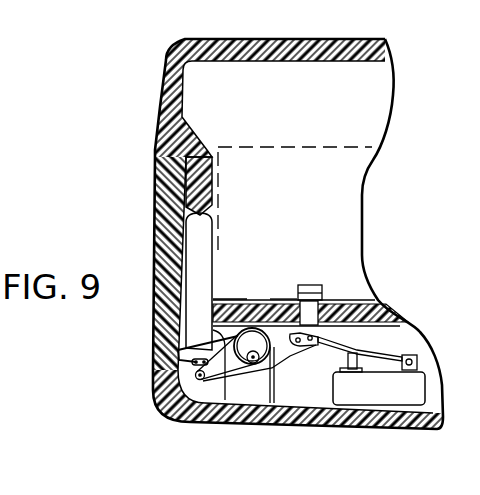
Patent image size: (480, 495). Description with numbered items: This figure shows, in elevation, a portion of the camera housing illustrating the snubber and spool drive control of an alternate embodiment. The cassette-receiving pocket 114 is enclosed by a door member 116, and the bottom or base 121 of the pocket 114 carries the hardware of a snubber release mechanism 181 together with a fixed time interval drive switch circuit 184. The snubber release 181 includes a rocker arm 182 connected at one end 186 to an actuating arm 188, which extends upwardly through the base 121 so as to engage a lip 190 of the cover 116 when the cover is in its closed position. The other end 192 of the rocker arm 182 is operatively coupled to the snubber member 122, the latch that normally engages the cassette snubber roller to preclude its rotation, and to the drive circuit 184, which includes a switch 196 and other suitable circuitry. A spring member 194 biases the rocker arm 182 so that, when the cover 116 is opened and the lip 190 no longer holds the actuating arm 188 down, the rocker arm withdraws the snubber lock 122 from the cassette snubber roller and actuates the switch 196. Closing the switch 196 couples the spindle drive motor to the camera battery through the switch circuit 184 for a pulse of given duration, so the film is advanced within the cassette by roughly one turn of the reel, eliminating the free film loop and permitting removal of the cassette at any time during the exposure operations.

The cassette-receiving pocket 114 is at (312, 190).
The door member 116 is at (313, 52).
The base of the pocket 121 is at (255, 299).
The snubber member 122 is at (311, 285).
The snubber release mechanism 181 is at (286, 300).
The rocker arm 182 is at (222, 398).
The drive switch circuit 184 is at (417, 432).
The one end of the rocker arm 186 is at (180, 372).
The actuating arm 188 is at (205, 228).
The lip of the cover 190 is at (208, 192).
The other end of the rocker arm 192 is at (322, 340).
The spring member 194 is at (222, 299).
The switch 196 is at (332, 346).